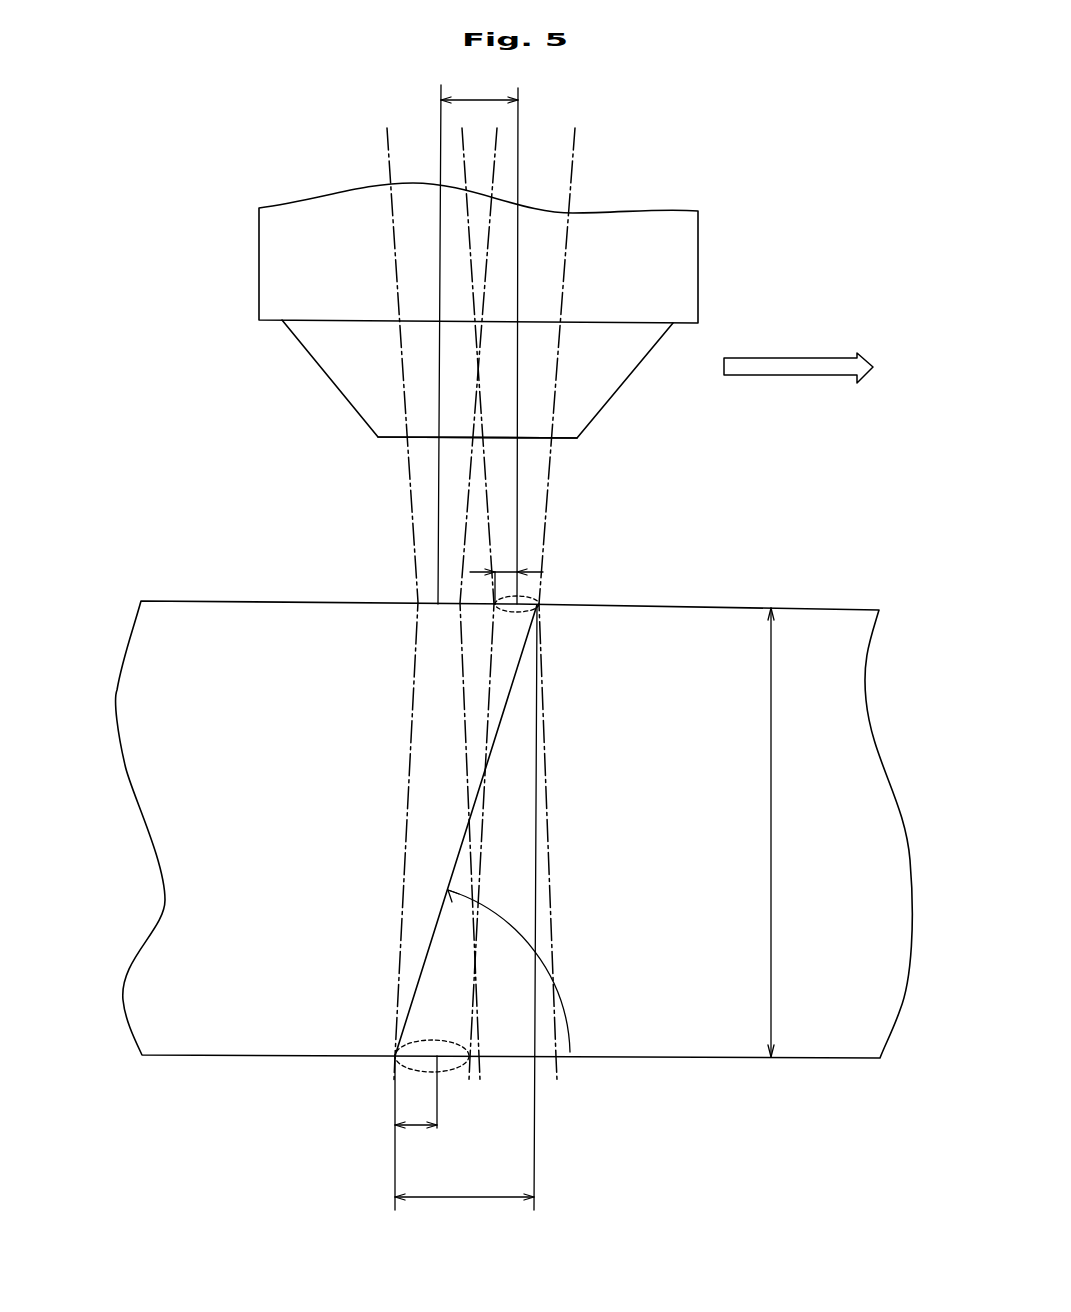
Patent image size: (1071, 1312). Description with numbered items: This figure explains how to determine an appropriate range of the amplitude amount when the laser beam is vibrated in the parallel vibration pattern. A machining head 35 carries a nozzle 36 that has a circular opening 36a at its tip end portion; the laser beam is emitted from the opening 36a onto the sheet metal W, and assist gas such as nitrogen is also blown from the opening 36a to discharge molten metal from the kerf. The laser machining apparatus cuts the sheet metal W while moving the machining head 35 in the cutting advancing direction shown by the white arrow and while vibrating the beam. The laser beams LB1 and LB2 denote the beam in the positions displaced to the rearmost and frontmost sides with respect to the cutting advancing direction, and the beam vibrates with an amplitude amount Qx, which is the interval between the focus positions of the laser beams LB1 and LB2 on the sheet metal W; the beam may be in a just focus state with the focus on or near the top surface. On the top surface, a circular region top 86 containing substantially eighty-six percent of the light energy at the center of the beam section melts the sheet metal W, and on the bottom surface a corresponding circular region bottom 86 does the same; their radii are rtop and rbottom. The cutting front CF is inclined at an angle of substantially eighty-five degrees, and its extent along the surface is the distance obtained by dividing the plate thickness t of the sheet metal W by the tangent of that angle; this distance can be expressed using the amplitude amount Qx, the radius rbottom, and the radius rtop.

The machining head 35 is at (698, 262).
The nozzle 36 is at (620, 388).
The opening 36a is at (577, 438).
The laser beam LB1 is at (410, 490).
The laser beam LB2 is at (545, 497).
The sheet metal W is at (718, 608).
The cutting front CF is at (432, 937).
The circular region top 86 top86 is at (541, 617).
The circular region bottom 86 bottom86 is at (412, 1070).
The amplitude amount Qx is at (478, 341).
The radius of circular region top 86 rtop is at (506, 576).
The radius of circular region bottom 86 rbottom is at (433, 1133).
The plate thickness t is at (776, 832).